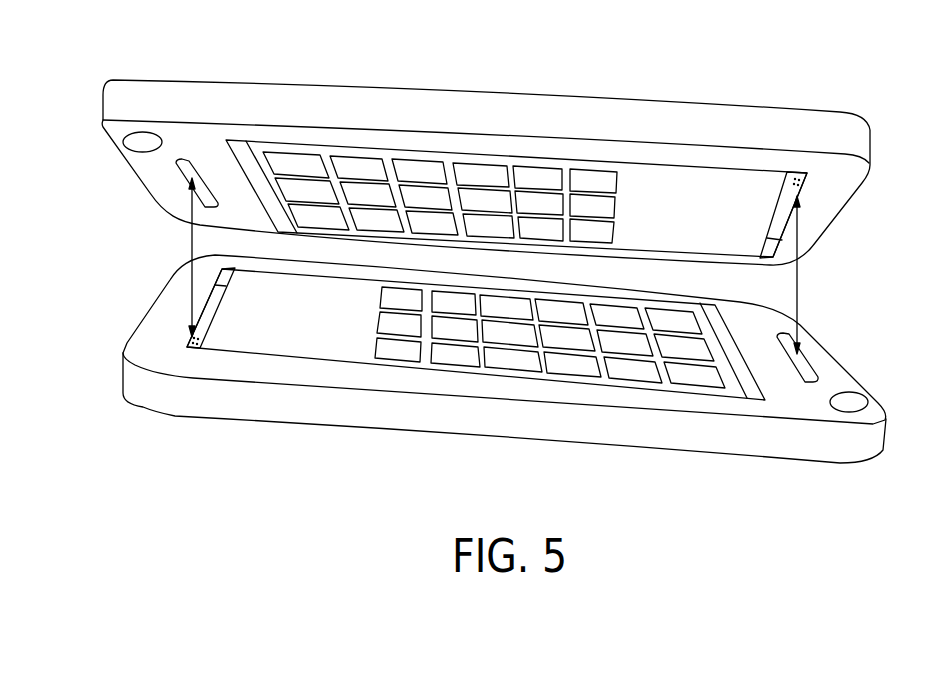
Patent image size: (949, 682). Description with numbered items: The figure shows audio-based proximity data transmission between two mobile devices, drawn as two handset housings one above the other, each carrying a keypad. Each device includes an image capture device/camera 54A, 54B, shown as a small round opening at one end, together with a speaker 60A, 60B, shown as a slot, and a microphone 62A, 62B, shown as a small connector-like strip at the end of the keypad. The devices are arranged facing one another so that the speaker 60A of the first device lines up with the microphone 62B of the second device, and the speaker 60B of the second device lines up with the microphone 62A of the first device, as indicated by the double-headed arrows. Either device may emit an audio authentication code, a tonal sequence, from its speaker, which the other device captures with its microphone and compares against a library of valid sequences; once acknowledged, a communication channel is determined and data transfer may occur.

The image capture device/camera 54A is at (282, 97).
The image capture device/camera 54B is at (608, 435).
The speaker 60A is at (188, 166).
The speaker 60B is at (803, 367).
The microphone 62A is at (841, 213).
The microphone 62B is at (150, 308).